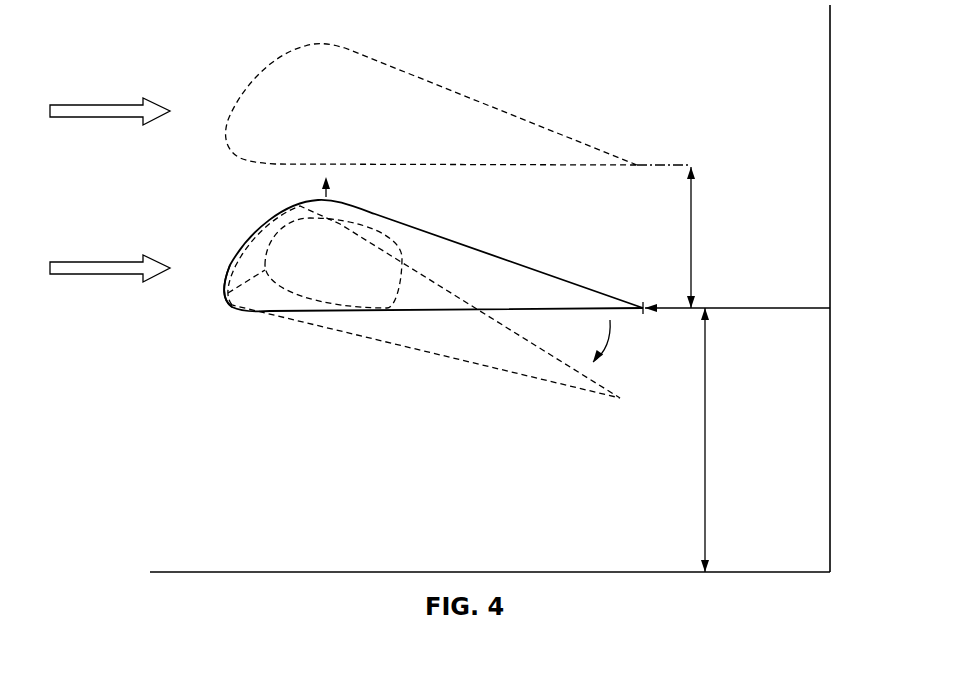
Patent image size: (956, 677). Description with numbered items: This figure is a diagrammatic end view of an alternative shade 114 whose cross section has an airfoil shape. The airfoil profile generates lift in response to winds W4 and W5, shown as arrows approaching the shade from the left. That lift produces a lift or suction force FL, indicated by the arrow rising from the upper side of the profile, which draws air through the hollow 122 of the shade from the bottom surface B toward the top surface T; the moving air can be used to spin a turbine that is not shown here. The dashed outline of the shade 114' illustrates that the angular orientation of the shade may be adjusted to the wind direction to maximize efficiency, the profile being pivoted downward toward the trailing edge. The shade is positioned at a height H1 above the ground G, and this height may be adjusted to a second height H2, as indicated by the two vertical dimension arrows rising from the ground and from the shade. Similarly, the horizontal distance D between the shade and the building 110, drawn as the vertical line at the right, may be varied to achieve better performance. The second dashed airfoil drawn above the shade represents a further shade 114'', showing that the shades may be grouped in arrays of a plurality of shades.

The building 110 is at (830, 175).
The shade 114 is at (433, 255).
The shade in adjusted angular orientation 114' is at (424, 322).
The additional shade of array 114'' is at (458, 99).
The hollow 122 is at (232, 306).
The top surface T is at (420, 226).
The bottom surface B is at (402, 313).
The ground G is at (346, 572).
The distance from building D is at (737, 307).
The height above ground H1 is at (705, 440).
The adjusted height H2 is at (691, 238).
The wind W4 is at (78, 105).
The wind W5 is at (83, 262).
The lift or suction force FL is at (341, 188).